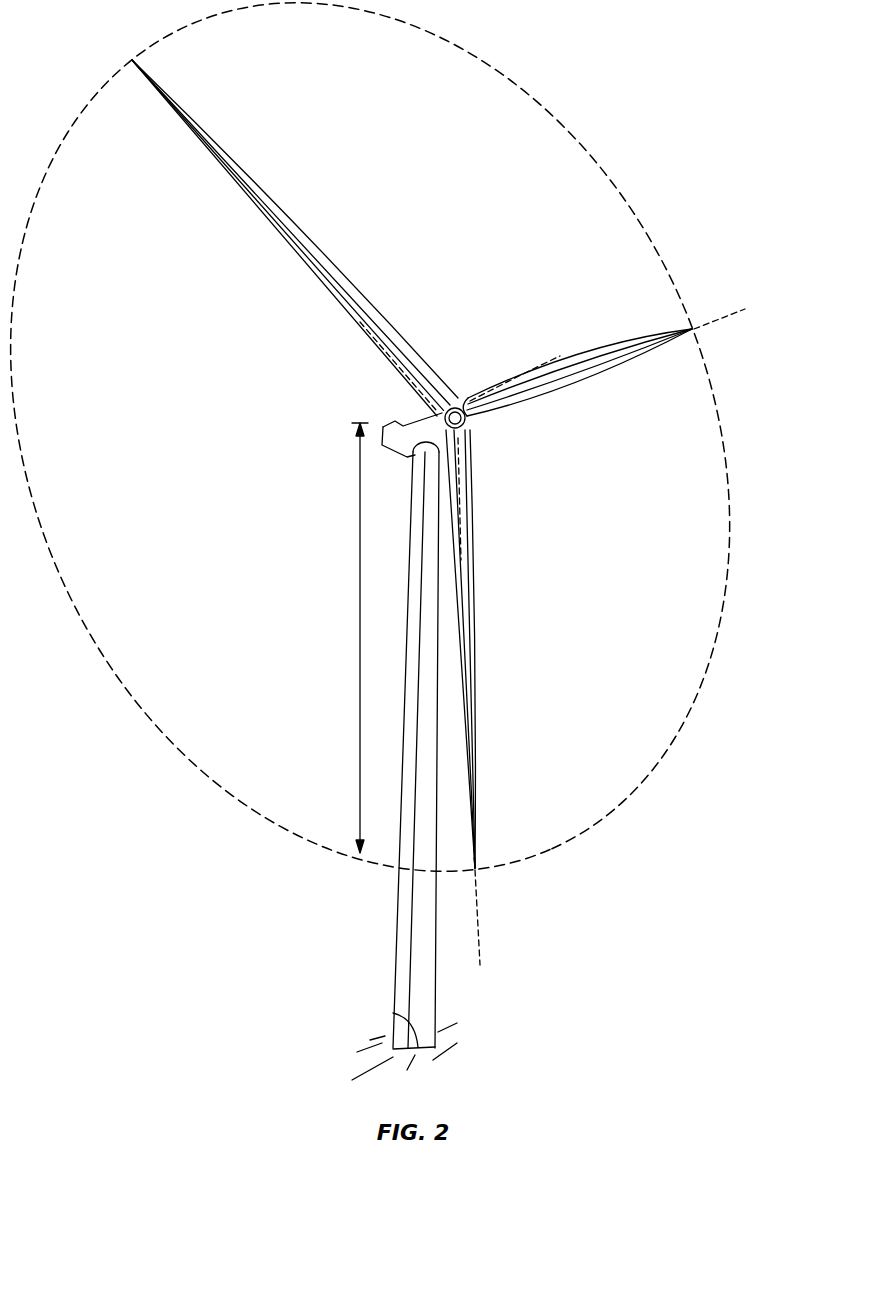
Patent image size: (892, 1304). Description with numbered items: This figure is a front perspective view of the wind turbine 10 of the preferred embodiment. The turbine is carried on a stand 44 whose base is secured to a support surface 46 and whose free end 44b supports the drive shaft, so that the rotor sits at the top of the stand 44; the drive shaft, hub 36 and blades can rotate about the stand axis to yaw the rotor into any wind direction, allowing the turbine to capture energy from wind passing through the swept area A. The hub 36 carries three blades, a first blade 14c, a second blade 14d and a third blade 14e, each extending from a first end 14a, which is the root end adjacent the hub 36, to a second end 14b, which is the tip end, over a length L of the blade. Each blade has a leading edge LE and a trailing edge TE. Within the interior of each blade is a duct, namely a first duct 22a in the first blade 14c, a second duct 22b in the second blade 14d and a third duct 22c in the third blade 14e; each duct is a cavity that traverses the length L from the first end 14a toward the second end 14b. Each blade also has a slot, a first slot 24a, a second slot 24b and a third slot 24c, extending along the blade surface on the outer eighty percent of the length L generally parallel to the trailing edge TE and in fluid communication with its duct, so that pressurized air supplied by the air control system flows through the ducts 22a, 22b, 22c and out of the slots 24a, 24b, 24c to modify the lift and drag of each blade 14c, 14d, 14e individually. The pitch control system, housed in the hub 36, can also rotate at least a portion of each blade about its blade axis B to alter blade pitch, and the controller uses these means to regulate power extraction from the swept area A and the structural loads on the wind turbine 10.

The wind turbine 10 is at (348, 520).
The first end (root end) of the blade 14a is at (468, 442).
The second end (tip end) of the blade 14b is at (132, 60).
The first blade 14c is at (295, 238).
The second blade 14d is at (567, 353).
The third blade 14e is at (457, 649).
The first duct 22a is at (402, 375).
The second duct 22b is at (474, 397).
The third duct 22c is at (455, 475).
The first slot 24a is at (260, 212).
The second slot 24b is at (615, 344).
The third slot 24c is at (470, 648).
The hub 36 is at (465, 420).
The stand 44 is at (381, 745).
The free end of the stand 44b is at (394, 1015).
The support surface 46 is at (372, 1078).
The swept area A is at (590, 142).
The blade axis B is at (618, 642).
The length of the blade L is at (352, 638).
The leading edge LE is at (256, 188).
The trailing edge TE is at (337, 312).